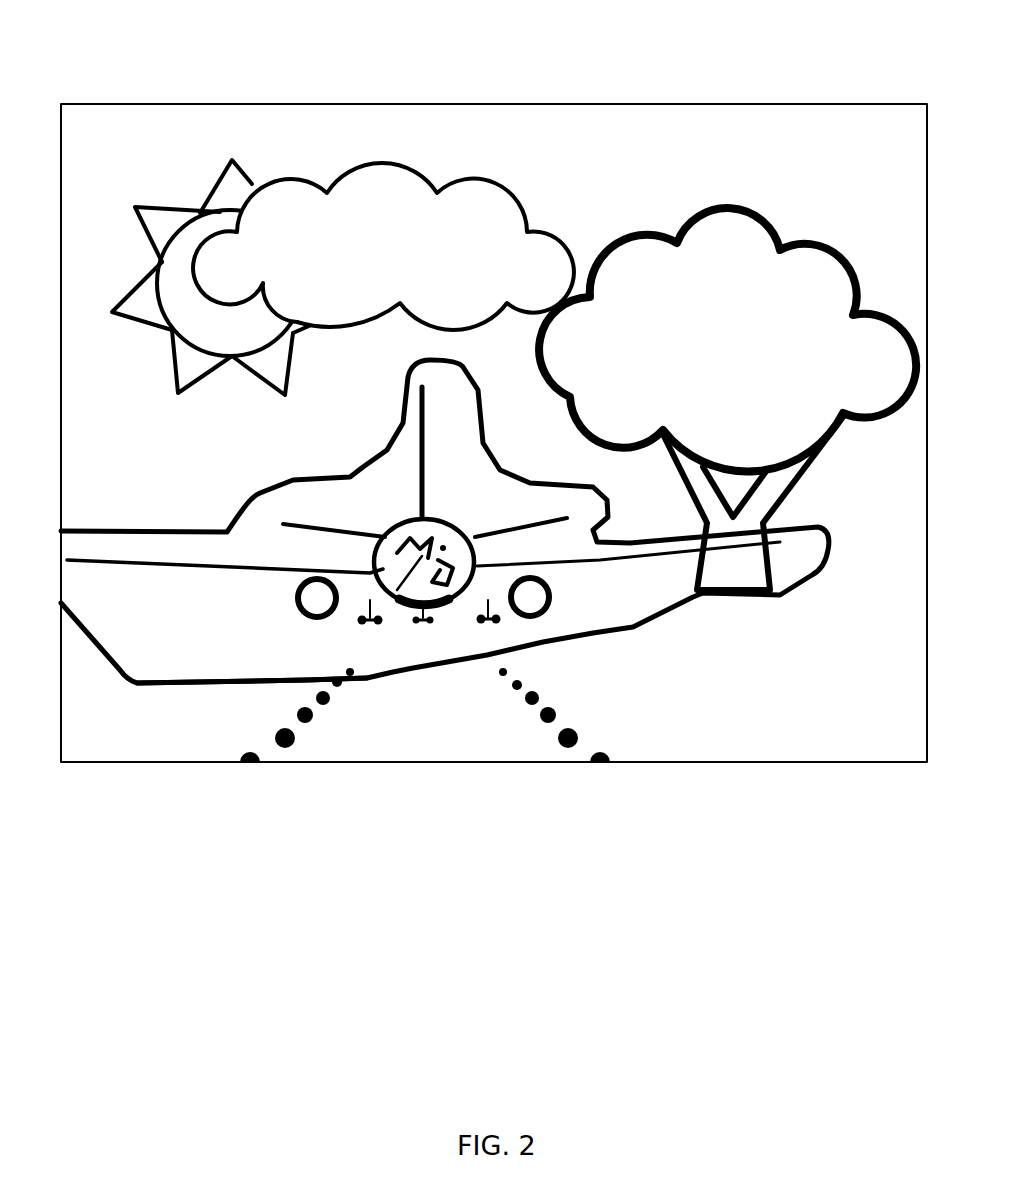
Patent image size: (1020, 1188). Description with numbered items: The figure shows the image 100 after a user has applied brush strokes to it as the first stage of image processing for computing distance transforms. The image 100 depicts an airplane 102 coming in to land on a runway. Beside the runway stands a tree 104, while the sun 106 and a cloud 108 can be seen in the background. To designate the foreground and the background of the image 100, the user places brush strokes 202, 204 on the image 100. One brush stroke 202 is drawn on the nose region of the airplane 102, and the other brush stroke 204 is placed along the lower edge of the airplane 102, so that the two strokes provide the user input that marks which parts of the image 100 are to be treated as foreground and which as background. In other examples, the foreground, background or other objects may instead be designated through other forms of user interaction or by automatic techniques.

The image 100 is at (592, 104).
The airplane 102 is at (320, 527).
The tree 104 is at (746, 356).
The sun 106 is at (250, 323).
The cloud 108 is at (418, 265).
The brush stroke 202 is at (415, 574).
The brush stroke 204 is at (223, 685).